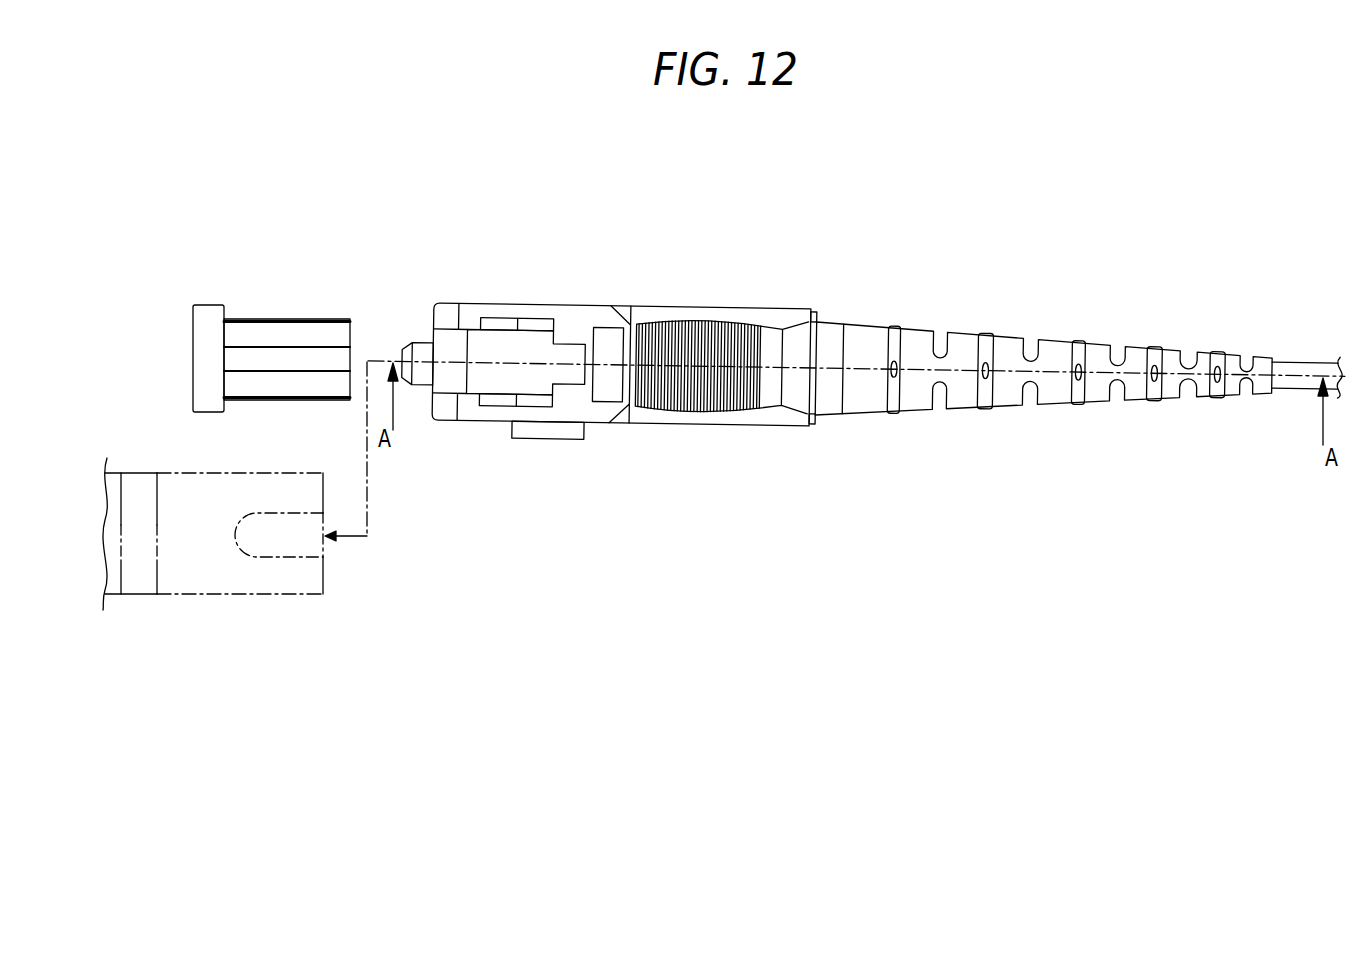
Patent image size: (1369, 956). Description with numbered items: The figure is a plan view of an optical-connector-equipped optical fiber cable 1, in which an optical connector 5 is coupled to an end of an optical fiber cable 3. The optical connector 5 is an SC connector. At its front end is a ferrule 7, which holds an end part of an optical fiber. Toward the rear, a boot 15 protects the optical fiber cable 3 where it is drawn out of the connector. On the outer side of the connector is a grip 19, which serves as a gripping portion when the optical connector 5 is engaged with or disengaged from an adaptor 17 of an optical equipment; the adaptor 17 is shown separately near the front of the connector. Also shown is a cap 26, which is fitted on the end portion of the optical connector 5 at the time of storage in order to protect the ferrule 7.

The optical-connector-equipped optical fiber cable 1 is at (850, 301).
The optical fiber cable 3 is at (1296, 384).
The optical connector 5 is at (703, 295).
The ferrule 7 is at (423, 372).
The boot 15 is at (916, 412).
The adaptor 17 is at (273, 596).
The grip 19 is at (640, 430).
The cap 26 is at (287, 317).